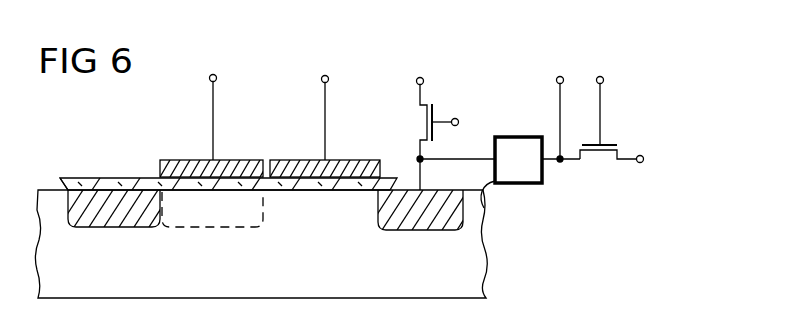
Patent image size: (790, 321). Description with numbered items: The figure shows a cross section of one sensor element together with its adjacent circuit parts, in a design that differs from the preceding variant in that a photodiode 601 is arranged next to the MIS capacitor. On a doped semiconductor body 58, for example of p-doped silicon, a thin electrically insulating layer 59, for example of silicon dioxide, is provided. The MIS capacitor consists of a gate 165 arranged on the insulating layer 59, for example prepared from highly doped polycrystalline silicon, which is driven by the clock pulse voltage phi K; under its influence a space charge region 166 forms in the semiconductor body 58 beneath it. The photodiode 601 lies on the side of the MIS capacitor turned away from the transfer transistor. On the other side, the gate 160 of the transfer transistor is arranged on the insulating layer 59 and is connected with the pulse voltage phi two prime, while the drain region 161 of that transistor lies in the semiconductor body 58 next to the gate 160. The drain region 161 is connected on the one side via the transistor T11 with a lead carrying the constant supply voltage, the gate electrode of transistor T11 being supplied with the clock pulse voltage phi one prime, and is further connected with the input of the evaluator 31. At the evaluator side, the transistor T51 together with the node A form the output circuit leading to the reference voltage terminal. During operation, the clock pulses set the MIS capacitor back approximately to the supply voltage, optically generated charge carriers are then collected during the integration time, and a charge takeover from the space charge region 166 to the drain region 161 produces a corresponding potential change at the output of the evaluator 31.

The semiconductor body 58 is at (478, 258).
The insulating layer 59 is at (97, 185).
The photodiode 601 is at (104, 220).
The space charge region 166 is at (203, 232).
The drain region 161 is at (425, 222).
The gate 165 is at (179, 163).
The gate 160 is at (293, 163).
The transistor T11 is at (442, 119).
The evaluator 31 is at (530, 126).
The transistor T51 is at (632, 120).